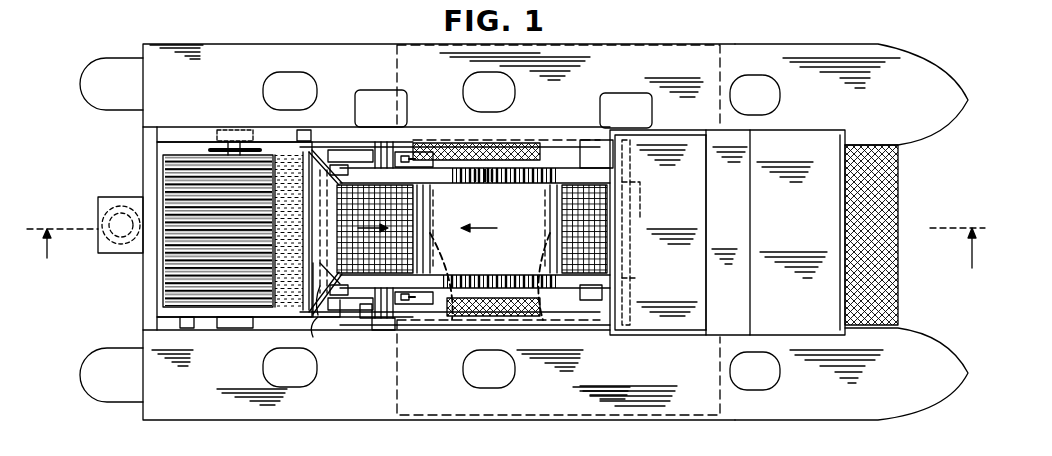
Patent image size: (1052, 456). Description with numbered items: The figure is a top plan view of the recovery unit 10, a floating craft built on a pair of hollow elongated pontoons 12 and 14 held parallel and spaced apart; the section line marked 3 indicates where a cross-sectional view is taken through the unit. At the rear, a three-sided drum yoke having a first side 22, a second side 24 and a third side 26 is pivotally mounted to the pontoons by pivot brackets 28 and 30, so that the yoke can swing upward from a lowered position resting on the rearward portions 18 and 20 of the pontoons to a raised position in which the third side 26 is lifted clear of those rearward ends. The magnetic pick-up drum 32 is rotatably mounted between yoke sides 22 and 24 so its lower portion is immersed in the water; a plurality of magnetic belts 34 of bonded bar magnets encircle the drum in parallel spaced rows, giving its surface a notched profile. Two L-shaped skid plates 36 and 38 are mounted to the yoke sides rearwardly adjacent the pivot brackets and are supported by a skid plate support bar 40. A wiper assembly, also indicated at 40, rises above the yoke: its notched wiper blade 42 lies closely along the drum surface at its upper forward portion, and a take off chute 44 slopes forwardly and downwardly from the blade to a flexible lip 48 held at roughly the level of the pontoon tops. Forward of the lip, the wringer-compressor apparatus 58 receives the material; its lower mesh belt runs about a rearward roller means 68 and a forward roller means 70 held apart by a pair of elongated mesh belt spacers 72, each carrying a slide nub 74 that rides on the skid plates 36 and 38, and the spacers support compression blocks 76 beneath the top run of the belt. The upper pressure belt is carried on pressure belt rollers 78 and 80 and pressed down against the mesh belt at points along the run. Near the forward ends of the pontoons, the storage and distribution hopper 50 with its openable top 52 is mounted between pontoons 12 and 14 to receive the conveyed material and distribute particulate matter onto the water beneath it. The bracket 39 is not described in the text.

The recovery unit 10 is at (726, 42).
The pontoon 12 is at (848, 408).
The pontoon 14 is at (830, 52).
The rearward portion of pontoon 18 is at (222, 337).
The rearward portion of pontoon 20 is at (217, 82).
The first side of drum yoke 22 is at (325, 323).
The second side of drum yoke 24 is at (173, 133).
The third side of drum yoke 26 is at (143, 283).
The pivot bracket 28 is at (382, 337).
The pivot bracket 30 is at (380, 125).
The magnetic pick-up drum 32 is at (177, 152).
The magnetic belt 34 is at (190, 197).
The L-shaped skid plate 36 is at (362, 312).
The L-shaped skid plate 38 is at (363, 165).
The bearing bracket 39 is at (337, 165).
The wiper assembly 40 is at (312, 150).
The wiper blade 42 is at (285, 160).
The take off chute 44 is at (313, 318).
The flexible lip 48 is at (332, 212).
The storage and distribution hopper 50 is at (776, 220).
The openable top 52 is at (715, 218).
The wringer-compressor apparatus 58 is at (567, 227).
The rearward roller means 68 is at (333, 265).
The forward roller means 70 is at (636, 281).
The mesh belt spacer 72 is at (510, 167).
The slide nub 74 is at (360, 150).
The compression block 76 is at (489, 173).
The pressure belt roller 78 is at (448, 291).
The pressure belt roller 80 is at (541, 291).
The section line 3- 3 is at (506, 248).